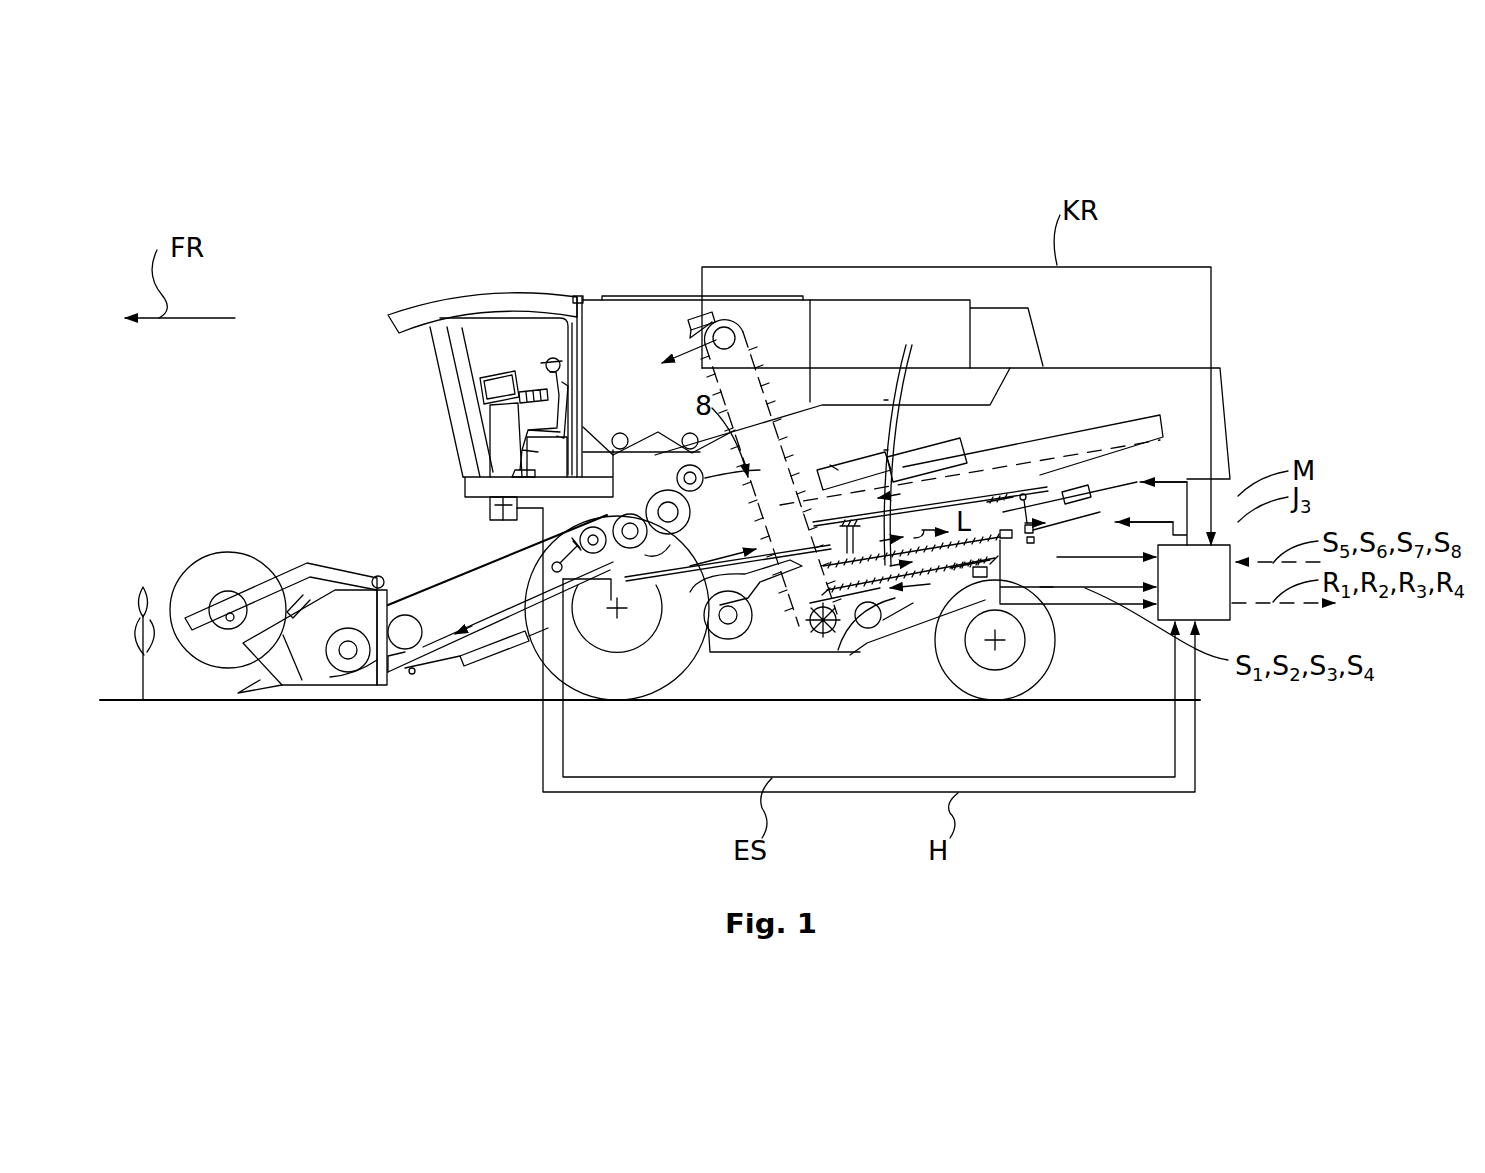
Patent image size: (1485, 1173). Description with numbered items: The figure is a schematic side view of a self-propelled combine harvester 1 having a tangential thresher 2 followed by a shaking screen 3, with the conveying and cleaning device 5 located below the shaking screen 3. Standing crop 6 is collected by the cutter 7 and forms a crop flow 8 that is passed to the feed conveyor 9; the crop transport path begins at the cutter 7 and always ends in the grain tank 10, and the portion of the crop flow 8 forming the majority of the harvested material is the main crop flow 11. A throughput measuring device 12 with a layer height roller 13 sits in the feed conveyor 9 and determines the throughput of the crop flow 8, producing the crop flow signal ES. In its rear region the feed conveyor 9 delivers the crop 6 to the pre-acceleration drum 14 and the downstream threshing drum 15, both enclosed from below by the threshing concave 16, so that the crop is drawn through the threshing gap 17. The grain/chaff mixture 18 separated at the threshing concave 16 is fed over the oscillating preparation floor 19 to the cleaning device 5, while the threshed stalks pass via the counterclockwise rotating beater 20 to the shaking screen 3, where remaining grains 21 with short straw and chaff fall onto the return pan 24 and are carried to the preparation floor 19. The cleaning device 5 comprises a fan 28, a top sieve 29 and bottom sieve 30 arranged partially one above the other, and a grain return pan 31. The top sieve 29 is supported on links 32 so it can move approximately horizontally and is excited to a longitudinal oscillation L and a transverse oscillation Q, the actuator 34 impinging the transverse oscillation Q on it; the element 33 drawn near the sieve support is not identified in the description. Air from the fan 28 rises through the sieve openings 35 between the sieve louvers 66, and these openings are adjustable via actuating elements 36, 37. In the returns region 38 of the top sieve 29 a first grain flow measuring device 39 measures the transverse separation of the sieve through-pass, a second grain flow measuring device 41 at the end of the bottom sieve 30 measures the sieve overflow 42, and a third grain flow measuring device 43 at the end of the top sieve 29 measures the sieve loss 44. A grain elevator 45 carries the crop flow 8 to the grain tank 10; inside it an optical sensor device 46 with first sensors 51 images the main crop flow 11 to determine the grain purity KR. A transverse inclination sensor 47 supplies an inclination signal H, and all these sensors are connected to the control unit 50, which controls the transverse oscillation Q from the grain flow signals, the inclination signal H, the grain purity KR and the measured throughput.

The combine harvester 1 is at (255, 193).
The tangential thresher 2 is at (612, 470).
The shaking screen 3 is at (878, 605).
The conveying and cleaning device 5 is at (862, 638).
The crop 6 is at (130, 568).
The cutter 7 is at (263, 518).
The crop flow 8 is at (435, 620).
The feed conveyor 9 is at (492, 625).
The grain tank 10 is at (626, 330).
The main crop flow 11 is at (670, 350).
The throughput measuring device 12 is at (547, 553).
The layer height roller 13 is at (553, 567).
The pre-acceleration drum 14 is at (619, 520).
The threshing drum 15 is at (660, 502).
The threshing concave 16 is at (728, 550).
The threshing gap 17 is at (617, 608).
The grain/chaff mixture 18 is at (704, 582).
The preparation floor 19 is at (665, 615).
The beater 20 is at (675, 470).
The grains 21 is at (890, 532).
The return pan 24 is at (914, 490).
The fan 28 is at (745, 622).
The top sieve 29 is at (837, 597).
The bottom sieve 30 is at (864, 607).
The grain return pan 31 is at (905, 612).
The links 32 is at (820, 467).
The sieve frame 33 is at (839, 511).
The actuator 34 is at (1095, 472).
The sieve openings 35 is at (913, 595).
The actuating element 36 is at (1038, 534).
The actuating element 37 is at (974, 600).
The returns region 38 is at (1015, 552).
The first grain flow measuring device 39 is at (1003, 552).
The second grain flow measuring device 41 is at (1025, 600).
The sieve overflow 42 is at (950, 595).
The third grain flow measuring device 43 is at (1058, 563).
The sieve loss 44 is at (1060, 487).
The grain elevator 45 is at (780, 365).
The optical sensor device 46 is at (697, 310).
The transverse inclination sensor 47 is at (490, 508).
The control unit 50 is at (1210, 597).
The first sensors 51 is at (701, 330).
The sieve louvers 66 is at (835, 532).